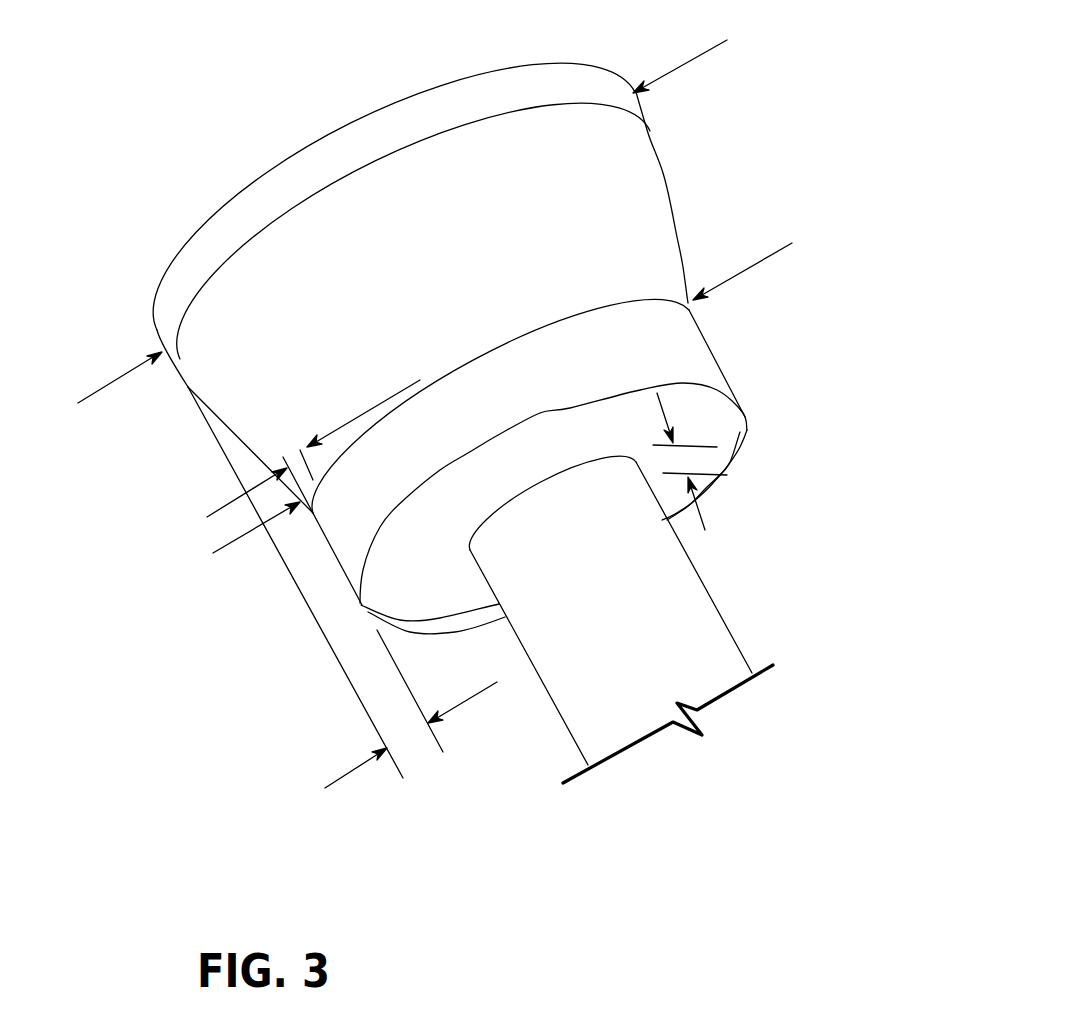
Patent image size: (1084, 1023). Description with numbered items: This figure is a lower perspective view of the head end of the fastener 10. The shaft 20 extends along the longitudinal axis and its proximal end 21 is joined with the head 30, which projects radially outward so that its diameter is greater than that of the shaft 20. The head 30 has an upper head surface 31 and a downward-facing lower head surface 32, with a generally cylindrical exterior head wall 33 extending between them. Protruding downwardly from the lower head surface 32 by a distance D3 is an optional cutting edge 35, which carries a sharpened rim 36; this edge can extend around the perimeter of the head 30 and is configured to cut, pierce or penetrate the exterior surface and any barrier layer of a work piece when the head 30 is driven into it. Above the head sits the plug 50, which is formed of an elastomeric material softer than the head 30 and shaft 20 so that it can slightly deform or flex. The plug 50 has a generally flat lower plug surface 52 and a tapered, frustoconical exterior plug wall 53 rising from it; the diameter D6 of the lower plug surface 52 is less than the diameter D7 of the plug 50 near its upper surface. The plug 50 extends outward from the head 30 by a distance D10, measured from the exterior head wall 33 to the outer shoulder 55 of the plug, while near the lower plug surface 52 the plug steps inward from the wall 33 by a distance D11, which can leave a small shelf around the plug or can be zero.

The fastener 10 is at (863, 193).
The shaft 20 is at (653, 619).
The proximal end 21 is at (650, 583).
The head 30 is at (540, 531).
The upper head surface 31 is at (690, 313).
The lower head surface 32 is at (442, 560).
The exterior head wall 33 is at (342, 573).
The cutting edge 35 is at (741, 433).
The rim 36 is at (750, 418).
The plug 50 is at (421, 288).
The lower plug surface 52 is at (330, 418).
The exterior plug wall 53 is at (672, 227).
The outer shoulder 55 is at (160, 339).
The distance D3 is at (693, 479).
The diameter D6 is at (568, 336).
The diameter D7 is at (426, 209).
The distance D10 is at (342, 604).
The distance D11 is at (238, 501).